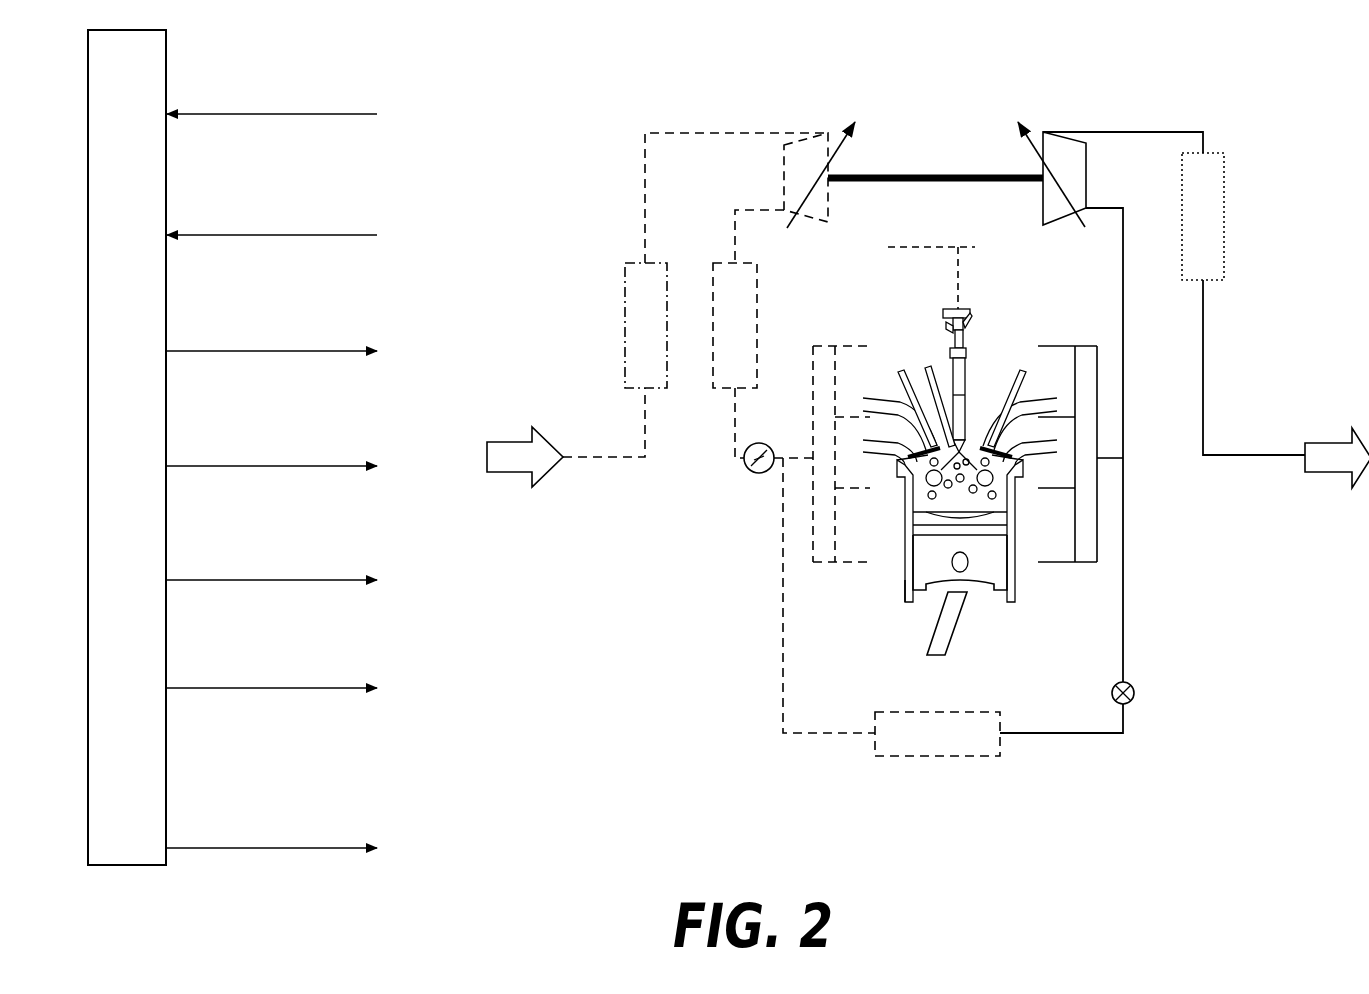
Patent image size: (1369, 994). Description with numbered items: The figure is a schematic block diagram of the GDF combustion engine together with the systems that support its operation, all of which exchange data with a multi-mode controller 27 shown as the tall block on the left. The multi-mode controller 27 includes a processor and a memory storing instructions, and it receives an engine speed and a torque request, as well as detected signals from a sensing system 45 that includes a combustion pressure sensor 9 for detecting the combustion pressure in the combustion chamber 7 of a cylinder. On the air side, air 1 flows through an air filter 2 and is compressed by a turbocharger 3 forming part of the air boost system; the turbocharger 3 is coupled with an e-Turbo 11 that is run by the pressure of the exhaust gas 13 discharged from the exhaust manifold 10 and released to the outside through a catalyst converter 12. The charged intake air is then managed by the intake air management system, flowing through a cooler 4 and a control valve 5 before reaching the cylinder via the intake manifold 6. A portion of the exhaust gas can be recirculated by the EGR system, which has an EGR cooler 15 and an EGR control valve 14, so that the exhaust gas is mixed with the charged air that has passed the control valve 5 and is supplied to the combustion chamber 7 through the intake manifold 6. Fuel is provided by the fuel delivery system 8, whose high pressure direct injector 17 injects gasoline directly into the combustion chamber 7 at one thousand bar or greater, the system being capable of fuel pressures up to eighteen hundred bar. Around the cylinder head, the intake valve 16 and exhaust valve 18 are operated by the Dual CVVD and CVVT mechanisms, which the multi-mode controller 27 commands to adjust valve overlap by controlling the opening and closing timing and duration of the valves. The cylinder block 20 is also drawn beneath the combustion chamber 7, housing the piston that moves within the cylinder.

The air 1 is at (525, 457).
The air filter 2 is at (646, 325).
The turbocharger 3 is at (819, 175).
The cooler 4 is at (735, 325).
The control valve 5 is at (759, 443).
The intake manifold 6 is at (841, 454).
The combustion chamber 7 is at (983, 503).
The fuel delivery system 8 is at (931, 335).
The combustion pressure sensor 9 is at (928, 366).
The exhaust manifold 10 is at (1080, 454).
The e-Turbo 11 is at (1052, 174).
The catalyst converter 12 is at (1203, 216).
The exhaust gas 13 is at (1337, 458).
The EGR control valve 14 is at (1112, 681).
The EGR cooler 15 is at (937, 734).
The intake valve 16 is at (898, 370).
The high pressure direct injector 17 is at (966, 380).
The exhaust valve 18 is at (1022, 368).
The cylinder block 20 is at (905, 598).
The multi-mode controller 27 is at (138, 476).
The sensing system 45 is at (267, 183).